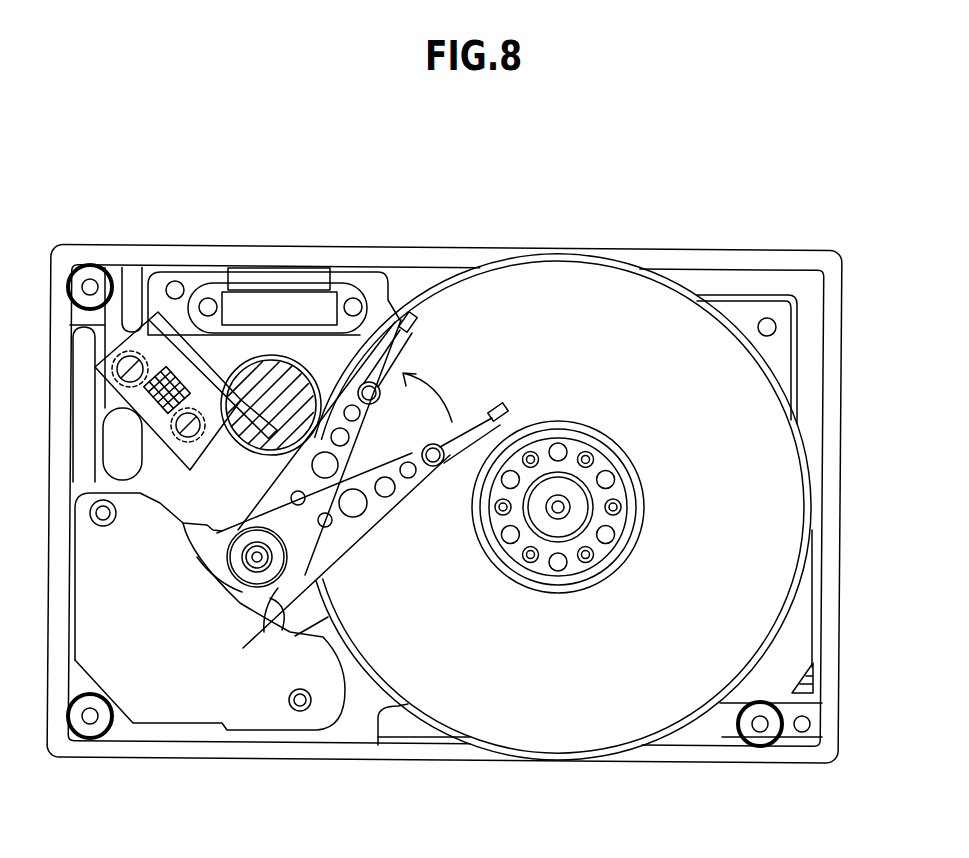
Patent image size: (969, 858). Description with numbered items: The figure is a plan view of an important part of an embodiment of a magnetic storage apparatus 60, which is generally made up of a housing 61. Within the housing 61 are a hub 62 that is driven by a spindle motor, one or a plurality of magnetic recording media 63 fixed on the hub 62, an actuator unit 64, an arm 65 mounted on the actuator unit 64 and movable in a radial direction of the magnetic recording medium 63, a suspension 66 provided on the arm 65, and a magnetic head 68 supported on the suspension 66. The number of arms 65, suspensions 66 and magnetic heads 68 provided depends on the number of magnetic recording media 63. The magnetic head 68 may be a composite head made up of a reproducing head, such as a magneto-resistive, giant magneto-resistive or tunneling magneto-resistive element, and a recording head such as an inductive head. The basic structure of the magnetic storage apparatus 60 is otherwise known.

The magnetic storage apparatus 60 is at (187, 190).
The housing 61 is at (322, 245).
The hub 62 is at (607, 573).
The magnetic recording medium 63 is at (783, 468).
The actuator unit 64 is at (280, 590).
The arm 65 is at (345, 538).
The suspension 66 is at (468, 422).
The magnetic head 68 is at (500, 407).